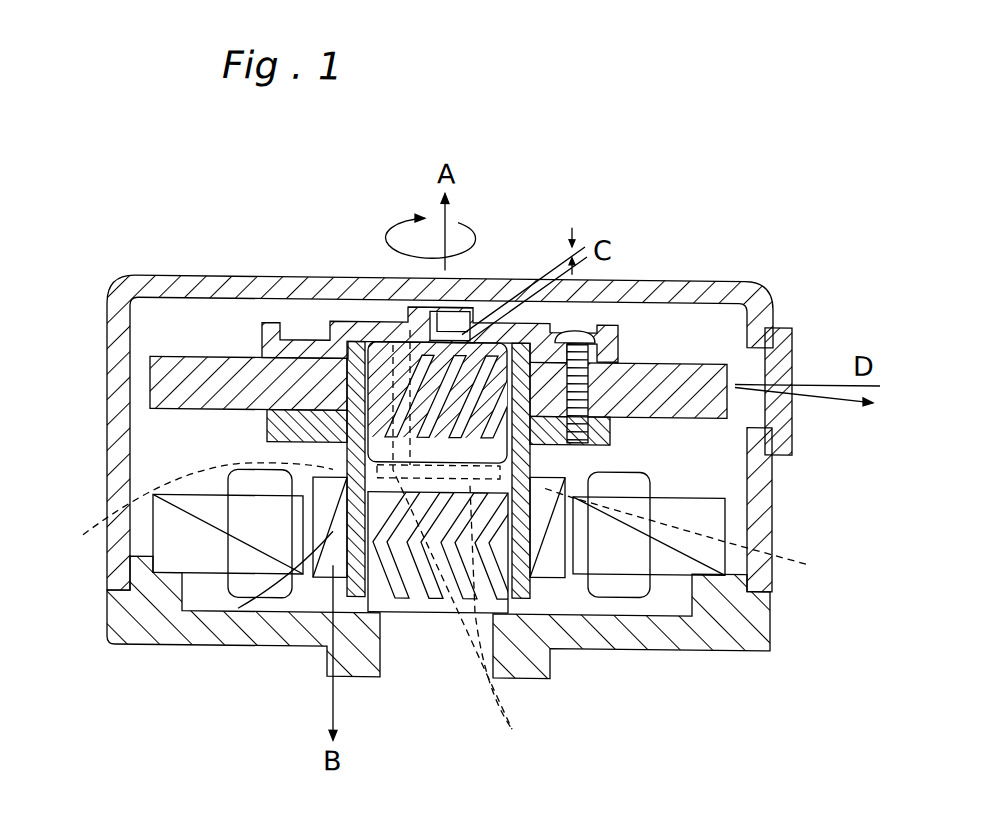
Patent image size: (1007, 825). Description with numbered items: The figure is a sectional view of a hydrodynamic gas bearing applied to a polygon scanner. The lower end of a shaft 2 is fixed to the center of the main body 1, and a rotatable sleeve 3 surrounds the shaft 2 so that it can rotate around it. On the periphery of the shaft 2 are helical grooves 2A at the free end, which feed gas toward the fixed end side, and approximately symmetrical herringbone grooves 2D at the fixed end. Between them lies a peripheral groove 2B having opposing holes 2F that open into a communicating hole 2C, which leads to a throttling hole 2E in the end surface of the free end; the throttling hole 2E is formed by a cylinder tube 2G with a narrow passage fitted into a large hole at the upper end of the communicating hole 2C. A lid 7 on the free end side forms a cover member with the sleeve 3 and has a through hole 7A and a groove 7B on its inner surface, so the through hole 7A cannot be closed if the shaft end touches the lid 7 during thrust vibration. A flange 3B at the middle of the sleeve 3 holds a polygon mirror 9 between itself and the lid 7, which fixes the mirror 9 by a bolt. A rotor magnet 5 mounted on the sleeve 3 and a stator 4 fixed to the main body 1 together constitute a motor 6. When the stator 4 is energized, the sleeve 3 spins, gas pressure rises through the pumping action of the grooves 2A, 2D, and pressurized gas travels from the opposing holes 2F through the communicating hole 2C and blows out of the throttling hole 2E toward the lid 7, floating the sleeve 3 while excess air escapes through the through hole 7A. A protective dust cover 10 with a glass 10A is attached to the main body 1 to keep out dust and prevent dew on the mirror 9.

The main body 1 is at (132, 625).
The shaft 2 is at (400, 667).
The helical grooves 2A is at (267, 428).
The peripheral groove 2B is at (333, 441).
The communicating hole 2C is at (473, 546).
The herringbone grooves 2D is at (392, 548).
The throttling hole 2E is at (393, 345).
The opposing holes 2F is at (451, 522).
The cylinder tube 2G is at (410, 330).
The sleeve 3 is at (345, 377).
The flange 3B is at (612, 431).
The stator 4 is at (167, 530).
The rotor magnet 5 is at (327, 575).
The motor 6 is at (292, 572).
The lid 7 is at (267, 334).
The through hole 7A is at (410, 306).
The groove 7B is at (452, 342).
The polygon mirror 9 is at (657, 385).
The protective dust cover 10 is at (757, 301).
The glass 10A is at (792, 334).